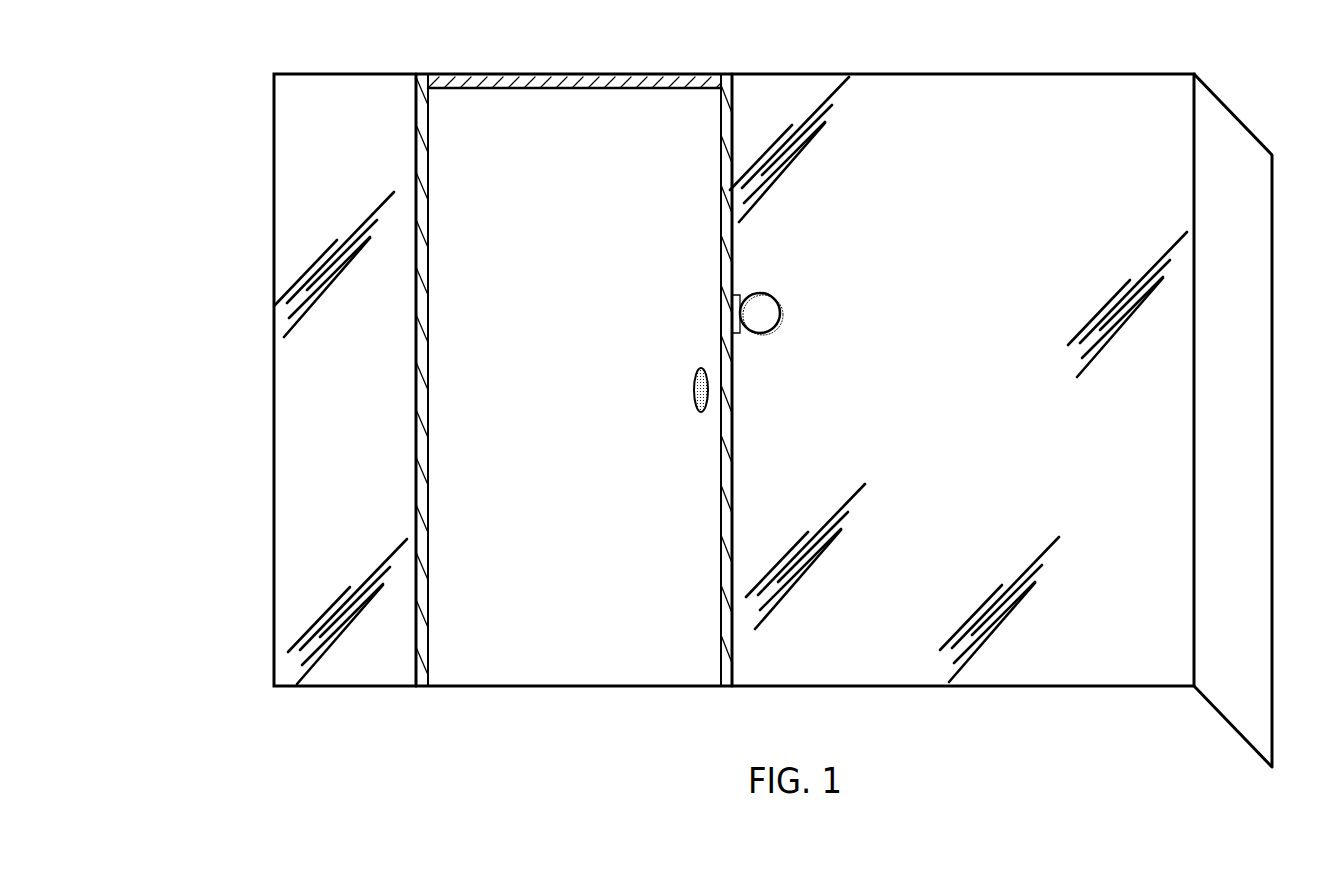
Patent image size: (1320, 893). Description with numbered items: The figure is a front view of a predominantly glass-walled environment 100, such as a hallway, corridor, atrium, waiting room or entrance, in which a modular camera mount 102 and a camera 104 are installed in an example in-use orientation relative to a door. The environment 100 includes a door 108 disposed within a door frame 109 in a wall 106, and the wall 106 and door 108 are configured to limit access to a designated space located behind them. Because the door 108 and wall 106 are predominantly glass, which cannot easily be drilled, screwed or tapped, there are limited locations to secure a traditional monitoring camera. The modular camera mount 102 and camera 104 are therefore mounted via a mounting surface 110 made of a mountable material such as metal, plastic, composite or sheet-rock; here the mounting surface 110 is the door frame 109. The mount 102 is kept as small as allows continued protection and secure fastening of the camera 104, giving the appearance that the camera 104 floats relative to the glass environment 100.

The predominantly glass-walled environment 100 is at (243, 236).
The modular camera mount 102 is at (737, 293).
The camera 104 is at (762, 290).
The wall 106 is at (731, 380).
The door 108 is at (510, 660).
The door frame 109 is at (590, 73).
The mounting surface 110 is at (742, 108).